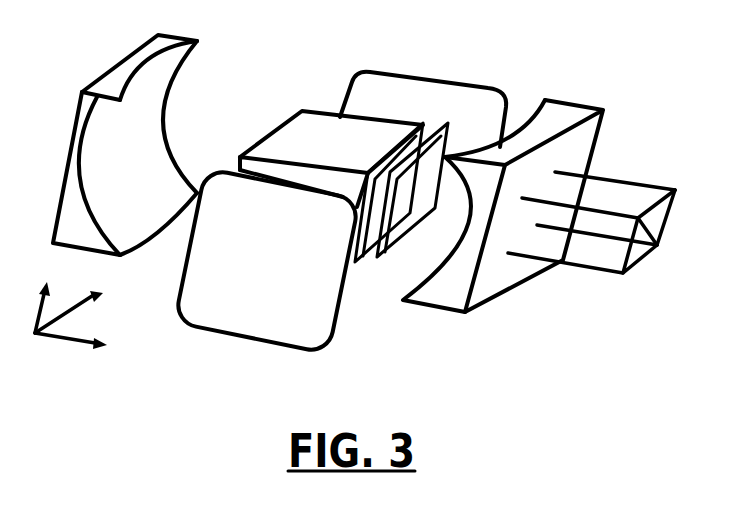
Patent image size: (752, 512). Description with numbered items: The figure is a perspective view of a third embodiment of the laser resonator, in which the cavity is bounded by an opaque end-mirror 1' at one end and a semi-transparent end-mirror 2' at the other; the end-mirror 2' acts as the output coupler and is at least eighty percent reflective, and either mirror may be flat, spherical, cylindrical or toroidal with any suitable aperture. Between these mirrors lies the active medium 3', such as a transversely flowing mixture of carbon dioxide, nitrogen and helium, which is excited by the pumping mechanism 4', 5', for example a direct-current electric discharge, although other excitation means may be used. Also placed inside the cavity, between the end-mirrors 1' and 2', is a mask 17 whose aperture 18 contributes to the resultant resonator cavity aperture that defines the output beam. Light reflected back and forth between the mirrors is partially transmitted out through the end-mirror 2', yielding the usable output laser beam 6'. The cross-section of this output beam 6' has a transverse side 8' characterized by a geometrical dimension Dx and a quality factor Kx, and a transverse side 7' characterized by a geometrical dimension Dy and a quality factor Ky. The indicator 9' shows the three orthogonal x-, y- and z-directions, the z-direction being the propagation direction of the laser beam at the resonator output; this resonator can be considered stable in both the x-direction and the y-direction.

The end-mirror 1' is at (106, 145).
The end-mirror 2' is at (519, 193).
The active medium 3' is at (331, 143).
The pumping mechanism 4' is at (287, 269).
The pumping mechanism 5' is at (423, 96).
The output laser beam 6' is at (602, 252).
The transverse side 7' is at (621, 217).
The transverse side 8' is at (623, 187).
The indicator 9' is at (74, 330).
The mask 17 is at (368, 262).
The aperture 18 is at (395, 222).